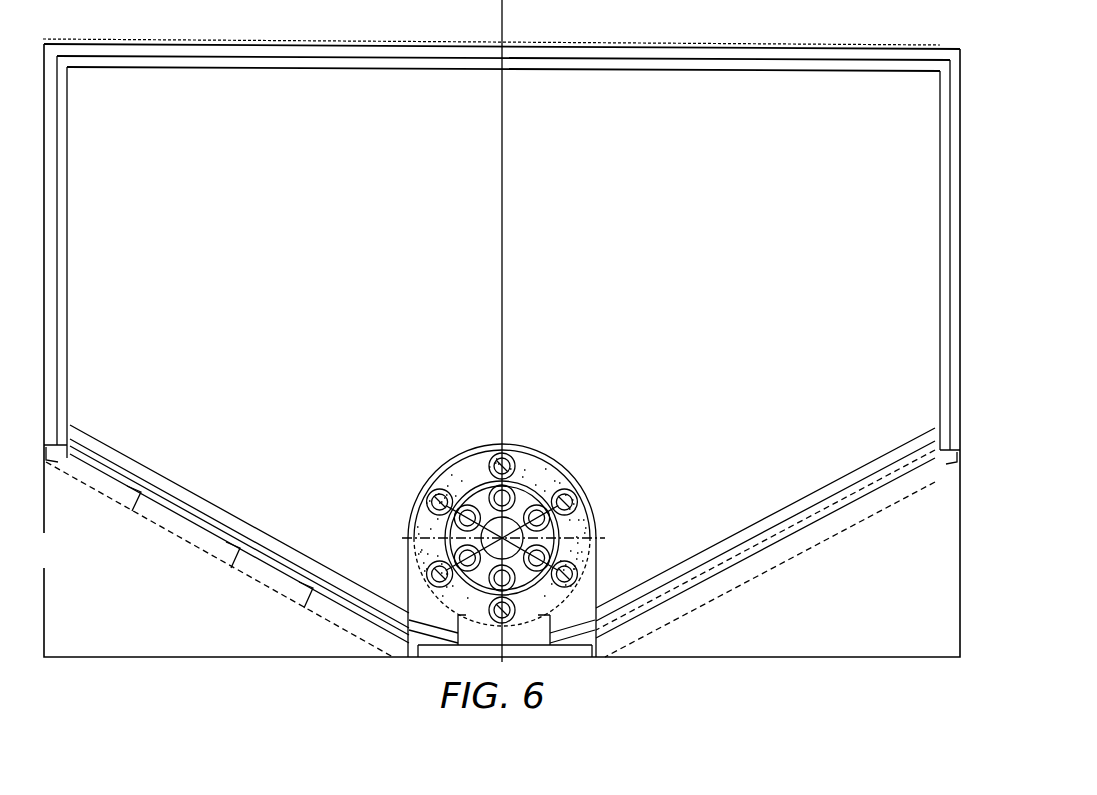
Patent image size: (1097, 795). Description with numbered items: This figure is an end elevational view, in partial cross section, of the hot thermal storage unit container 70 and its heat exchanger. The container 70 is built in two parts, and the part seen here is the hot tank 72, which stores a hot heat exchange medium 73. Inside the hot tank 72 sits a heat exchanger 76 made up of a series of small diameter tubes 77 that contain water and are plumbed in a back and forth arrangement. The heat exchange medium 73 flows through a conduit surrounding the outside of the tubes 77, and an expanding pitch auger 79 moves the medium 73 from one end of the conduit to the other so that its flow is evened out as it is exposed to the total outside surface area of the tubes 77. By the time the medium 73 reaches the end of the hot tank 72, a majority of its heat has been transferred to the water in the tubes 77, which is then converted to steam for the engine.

The container 70 is at (900, 44).
The hot tank 72 is at (66, 324).
The heat exchange medium 73 is at (660, 340).
The heat exchanger 76 is at (568, 471).
The tubes 77 is at (427, 502).
The expanding pitch auger 79 is at (505, 2).